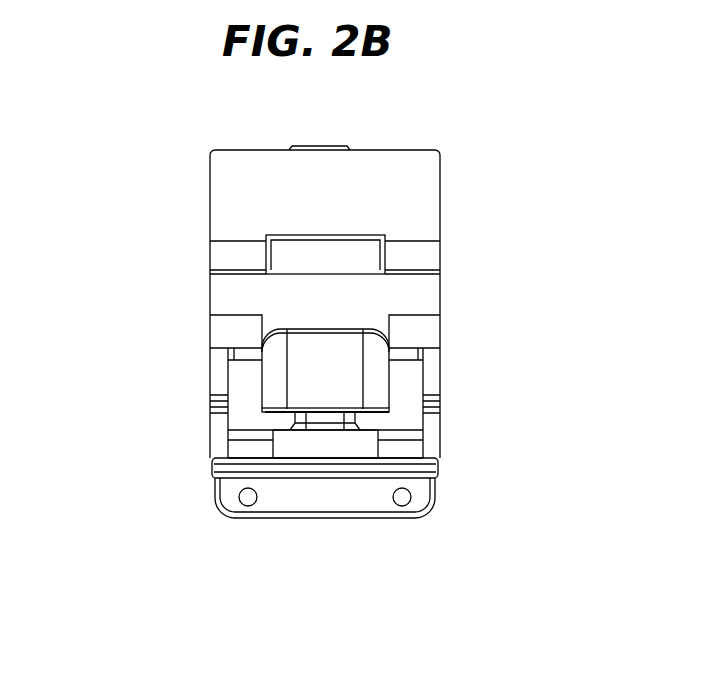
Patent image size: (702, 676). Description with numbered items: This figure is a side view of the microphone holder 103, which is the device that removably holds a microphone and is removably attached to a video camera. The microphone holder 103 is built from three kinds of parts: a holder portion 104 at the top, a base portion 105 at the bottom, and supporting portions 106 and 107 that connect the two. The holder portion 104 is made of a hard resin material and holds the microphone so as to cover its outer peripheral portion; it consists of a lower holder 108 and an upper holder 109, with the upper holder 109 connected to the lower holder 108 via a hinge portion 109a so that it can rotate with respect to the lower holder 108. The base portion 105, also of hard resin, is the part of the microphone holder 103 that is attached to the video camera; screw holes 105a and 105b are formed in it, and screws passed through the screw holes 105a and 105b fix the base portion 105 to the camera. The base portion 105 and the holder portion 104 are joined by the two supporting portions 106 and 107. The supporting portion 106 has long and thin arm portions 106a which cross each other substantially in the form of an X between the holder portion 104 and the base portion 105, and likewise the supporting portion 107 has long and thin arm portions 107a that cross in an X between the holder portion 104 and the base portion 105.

The microphone holder 103 is at (233, 590).
The holder portion 104 is at (397, 148).
The base portion 105 is at (327, 505).
The screw hole 105a is at (248, 498).
The screw hole 105b is at (402, 498).
The supporting portion 106 is at (210, 370).
The arm portions 106a is at (222, 430).
The supporting portion 107 is at (440, 368).
The arm portions 107a is at (437, 438).
The lower holder 108 is at (427, 297).
The upper holder 109 is at (427, 203).
The hinge portion 109a is at (222, 253).